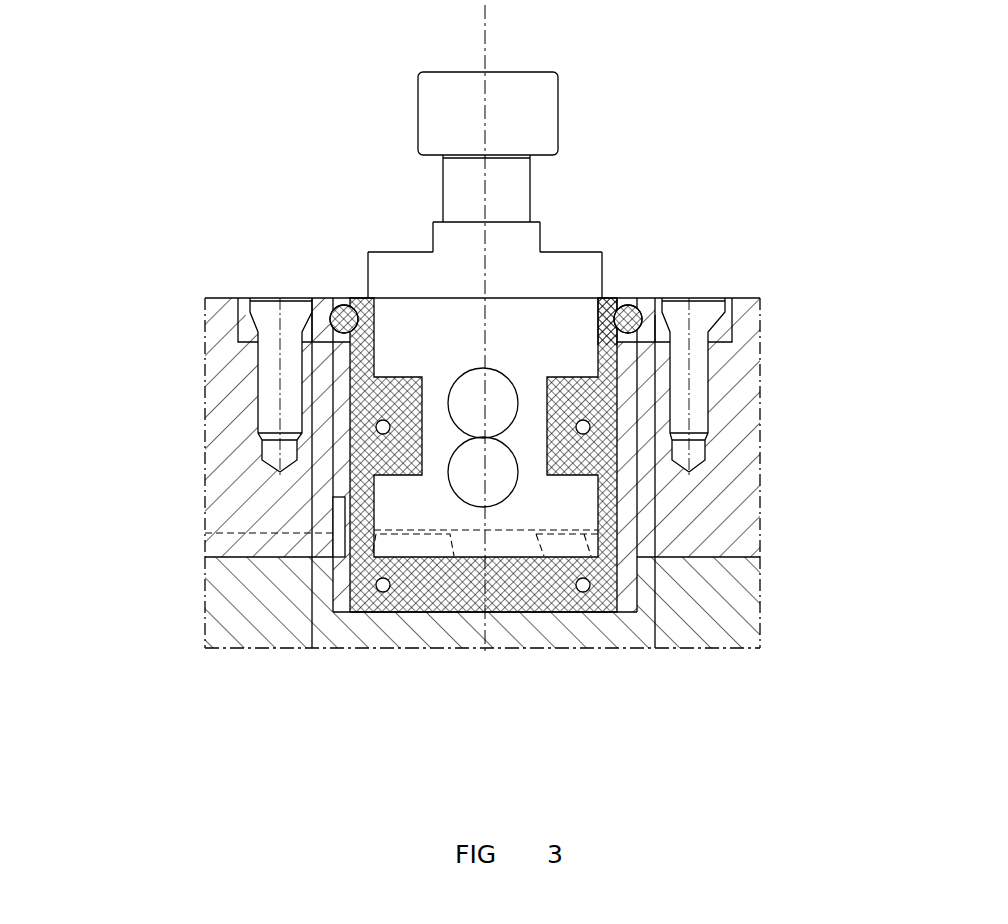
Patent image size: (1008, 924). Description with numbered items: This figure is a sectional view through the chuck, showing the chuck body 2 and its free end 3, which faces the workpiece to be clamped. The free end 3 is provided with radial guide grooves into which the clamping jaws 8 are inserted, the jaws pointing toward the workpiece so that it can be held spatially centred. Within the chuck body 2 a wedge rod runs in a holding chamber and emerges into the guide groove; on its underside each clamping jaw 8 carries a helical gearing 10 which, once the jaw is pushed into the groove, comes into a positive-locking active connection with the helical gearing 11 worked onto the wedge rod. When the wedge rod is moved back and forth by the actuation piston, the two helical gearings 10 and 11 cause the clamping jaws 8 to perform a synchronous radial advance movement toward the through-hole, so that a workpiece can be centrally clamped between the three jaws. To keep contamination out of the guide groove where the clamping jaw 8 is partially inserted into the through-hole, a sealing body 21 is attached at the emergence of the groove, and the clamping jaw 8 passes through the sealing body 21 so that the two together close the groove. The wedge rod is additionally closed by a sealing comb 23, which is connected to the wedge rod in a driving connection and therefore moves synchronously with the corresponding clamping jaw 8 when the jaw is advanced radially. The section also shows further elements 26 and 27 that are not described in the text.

The chuck body 2 is at (760, 388).
The free end 3 is at (222, 297).
The clamping jaws 8 is at (432, 233).
The helical gearing 10 is at (538, 535).
The helical gearing 11 is at (300, 513).
The sealing body 21 is at (323, 296).
The sealing comb 23 is at (333, 510).
The seal seat 26 is at (608, 300).
The sealing ring 27 is at (648, 300).